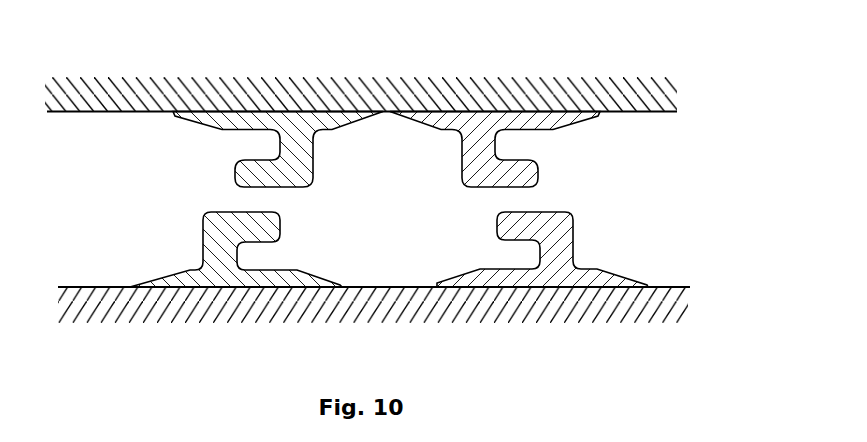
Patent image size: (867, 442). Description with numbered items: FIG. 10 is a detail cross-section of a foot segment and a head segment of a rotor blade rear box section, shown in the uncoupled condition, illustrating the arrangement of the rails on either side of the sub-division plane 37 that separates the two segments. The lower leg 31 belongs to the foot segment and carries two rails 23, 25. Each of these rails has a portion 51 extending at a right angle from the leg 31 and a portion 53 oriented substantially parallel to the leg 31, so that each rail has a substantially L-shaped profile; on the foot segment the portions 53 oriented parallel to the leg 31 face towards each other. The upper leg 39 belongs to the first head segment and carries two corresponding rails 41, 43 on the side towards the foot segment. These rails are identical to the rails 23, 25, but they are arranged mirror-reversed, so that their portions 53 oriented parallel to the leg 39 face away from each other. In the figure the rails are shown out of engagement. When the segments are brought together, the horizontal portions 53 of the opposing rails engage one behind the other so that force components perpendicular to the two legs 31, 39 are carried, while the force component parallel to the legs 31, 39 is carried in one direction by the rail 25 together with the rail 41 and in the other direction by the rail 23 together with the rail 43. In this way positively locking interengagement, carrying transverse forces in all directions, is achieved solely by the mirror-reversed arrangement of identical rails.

The rail 23 is at (222, 275).
The rail 25 is at (543, 270).
The leg 31 is at (108, 318).
The sub-division plane 37 is at (93, 169).
The leg 39 is at (151, 100).
The rail 41 is at (248, 120).
The rail 43 is at (473, 127).
The portion 51 is at (274, 140).
The portion 53 is at (264, 172).